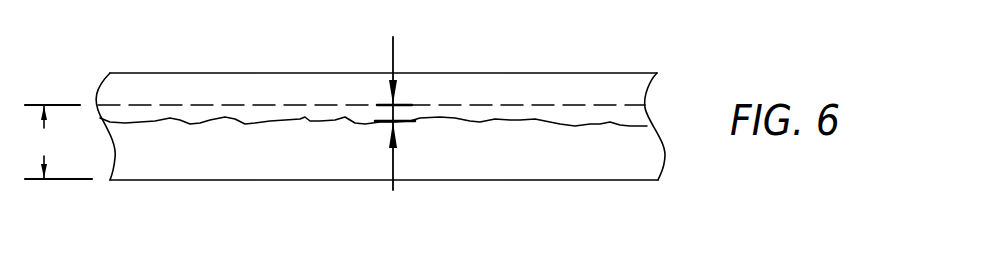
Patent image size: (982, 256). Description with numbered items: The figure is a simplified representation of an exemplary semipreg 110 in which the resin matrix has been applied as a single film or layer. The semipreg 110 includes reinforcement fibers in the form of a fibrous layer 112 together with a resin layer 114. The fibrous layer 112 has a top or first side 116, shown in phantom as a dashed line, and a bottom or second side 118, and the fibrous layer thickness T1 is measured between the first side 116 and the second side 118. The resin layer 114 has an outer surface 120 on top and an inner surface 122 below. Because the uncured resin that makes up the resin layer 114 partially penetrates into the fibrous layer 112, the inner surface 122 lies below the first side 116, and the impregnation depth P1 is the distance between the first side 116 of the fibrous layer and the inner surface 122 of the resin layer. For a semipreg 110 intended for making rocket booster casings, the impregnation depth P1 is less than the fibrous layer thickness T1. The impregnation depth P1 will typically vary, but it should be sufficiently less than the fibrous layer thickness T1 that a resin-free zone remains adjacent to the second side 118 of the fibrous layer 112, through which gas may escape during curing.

The semipreg 110 is at (414, 128).
The fibrous layer 112 is at (640, 157).
The resin layer 114 is at (182, 88).
The first side 116 is at (611, 105).
The second side 118 is at (326, 181).
The outer surface 120 is at (302, 73).
The inner surface 122 is at (212, 122).
The impregnation depth P1 is at (393, 62).
The fibrous layer thickness T1 is at (58, 142).